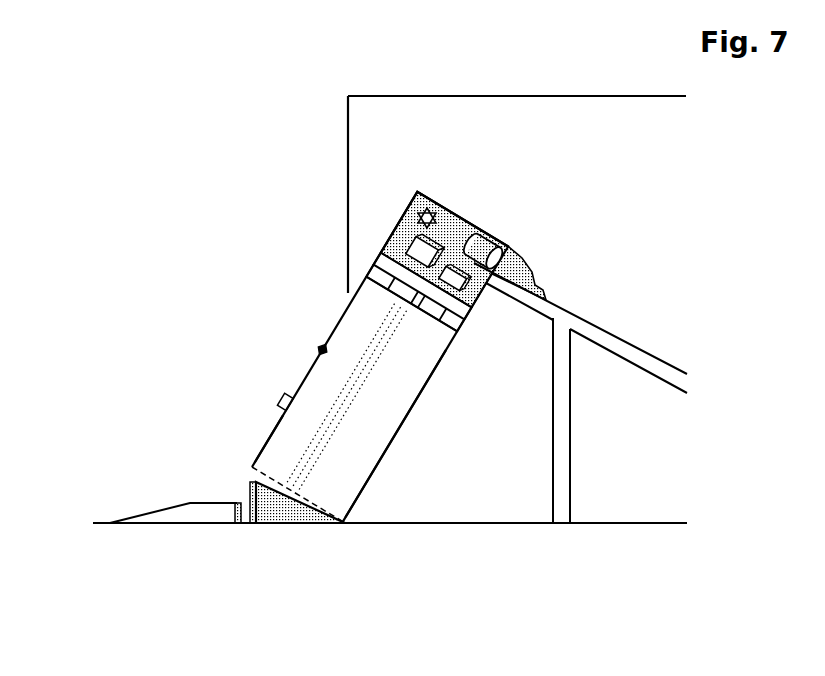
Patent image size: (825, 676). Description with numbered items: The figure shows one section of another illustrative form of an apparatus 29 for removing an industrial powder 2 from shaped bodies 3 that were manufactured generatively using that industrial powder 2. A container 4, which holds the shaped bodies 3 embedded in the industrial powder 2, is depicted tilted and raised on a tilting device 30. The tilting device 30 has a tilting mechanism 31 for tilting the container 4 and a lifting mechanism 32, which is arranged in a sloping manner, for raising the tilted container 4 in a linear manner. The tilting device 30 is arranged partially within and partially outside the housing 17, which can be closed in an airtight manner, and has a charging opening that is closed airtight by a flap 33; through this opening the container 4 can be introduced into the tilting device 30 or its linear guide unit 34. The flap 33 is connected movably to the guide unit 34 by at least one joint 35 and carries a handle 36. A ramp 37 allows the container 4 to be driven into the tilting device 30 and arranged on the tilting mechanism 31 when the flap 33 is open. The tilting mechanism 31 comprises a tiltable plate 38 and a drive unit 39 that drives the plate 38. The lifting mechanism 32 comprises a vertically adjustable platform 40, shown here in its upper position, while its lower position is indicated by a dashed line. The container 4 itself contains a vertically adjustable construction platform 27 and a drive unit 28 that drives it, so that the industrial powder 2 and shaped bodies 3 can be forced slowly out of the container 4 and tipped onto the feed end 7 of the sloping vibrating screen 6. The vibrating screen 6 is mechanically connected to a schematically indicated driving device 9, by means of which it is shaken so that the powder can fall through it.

The industrial powder 2 is at (452, 223).
The shaped bodies 3 is at (481, 246).
The container 4 is at (360, 270).
The vibrating screen 6 is at (636, 344).
The feed end 7 is at (502, 278).
The driving device 9 is at (563, 443).
The housing 17 is at (533, 96).
The construction platform 27 is at (367, 257).
The drive unit 28 is at (372, 297).
The apparatus 29 is at (198, 84).
The tilting device 30 is at (300, 374).
The tilting mechanism 31 is at (289, 512).
The lifting mechanism 32 is at (381, 353).
The flap 33 is at (262, 445).
The linear guide unit 34 is at (403, 423).
The joint 35 is at (318, 347).
The handle 36 is at (280, 398).
The ramp 37 is at (177, 520).
The tiltable plate 38 is at (281, 496).
The drive unit 39 is at (240, 503).
The platform 40 is at (375, 283).